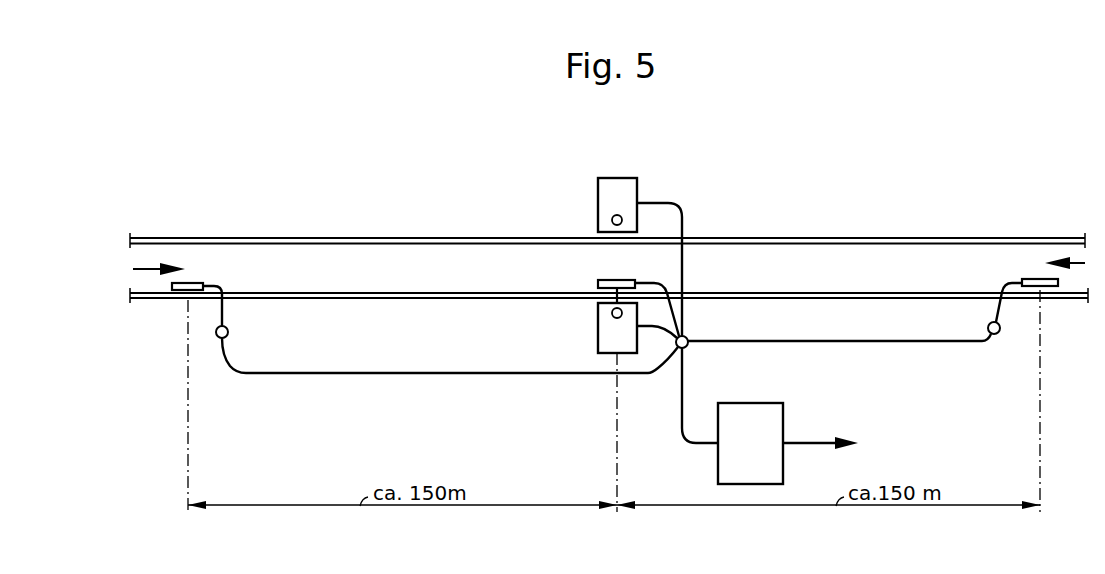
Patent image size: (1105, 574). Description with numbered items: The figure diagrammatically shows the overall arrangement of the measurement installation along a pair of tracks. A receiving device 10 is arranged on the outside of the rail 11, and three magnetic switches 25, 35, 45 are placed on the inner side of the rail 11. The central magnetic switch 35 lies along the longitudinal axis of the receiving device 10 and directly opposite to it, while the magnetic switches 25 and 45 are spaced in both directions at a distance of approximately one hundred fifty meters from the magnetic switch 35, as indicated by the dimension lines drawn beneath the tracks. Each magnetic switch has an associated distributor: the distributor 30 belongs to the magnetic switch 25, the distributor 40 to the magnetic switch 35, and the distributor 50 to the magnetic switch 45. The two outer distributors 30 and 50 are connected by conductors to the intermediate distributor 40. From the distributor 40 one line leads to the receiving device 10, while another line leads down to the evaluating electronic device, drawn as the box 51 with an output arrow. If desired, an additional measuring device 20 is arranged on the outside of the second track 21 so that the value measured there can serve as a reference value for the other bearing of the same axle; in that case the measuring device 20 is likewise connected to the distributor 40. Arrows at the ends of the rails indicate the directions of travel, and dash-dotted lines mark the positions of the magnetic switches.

The receiving device 10 is at (607, 332).
The rail 11 is at (300, 293).
The additional measuring device 20 is at (598, 206).
The second track 21 is at (302, 238).
The magnetic switch 25 is at (203, 284).
The distributor 30 is at (228, 330).
The magnetic switch 35 is at (600, 281).
The distributor 40 is at (688, 338).
The magnetic switch 45 is at (1022, 280).
The distributor 50 is at (988, 326).
The evaluation unit 51 is at (748, 410).